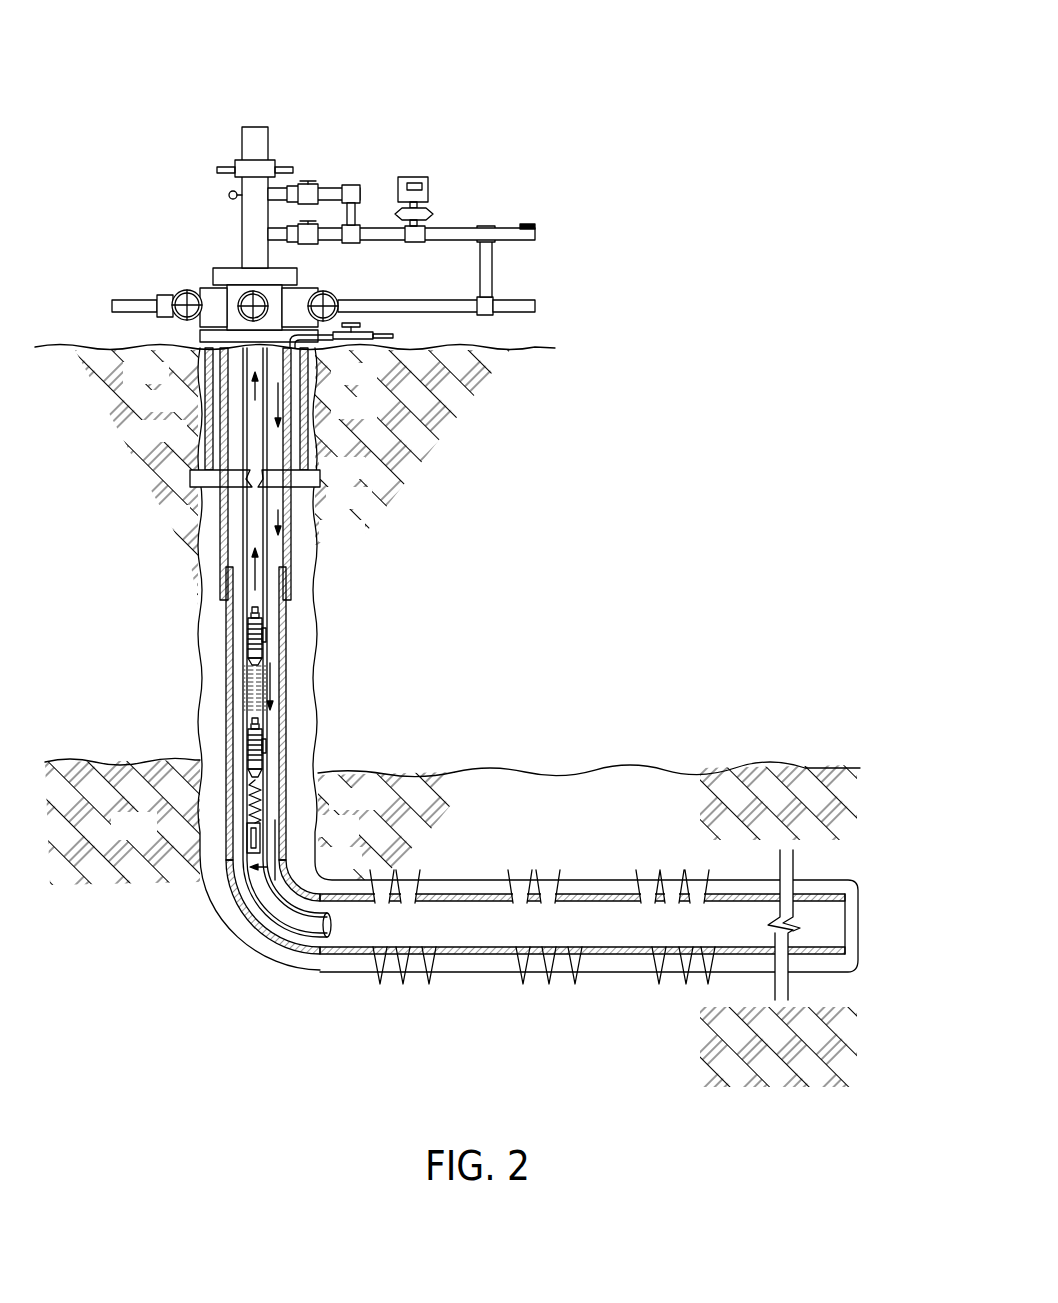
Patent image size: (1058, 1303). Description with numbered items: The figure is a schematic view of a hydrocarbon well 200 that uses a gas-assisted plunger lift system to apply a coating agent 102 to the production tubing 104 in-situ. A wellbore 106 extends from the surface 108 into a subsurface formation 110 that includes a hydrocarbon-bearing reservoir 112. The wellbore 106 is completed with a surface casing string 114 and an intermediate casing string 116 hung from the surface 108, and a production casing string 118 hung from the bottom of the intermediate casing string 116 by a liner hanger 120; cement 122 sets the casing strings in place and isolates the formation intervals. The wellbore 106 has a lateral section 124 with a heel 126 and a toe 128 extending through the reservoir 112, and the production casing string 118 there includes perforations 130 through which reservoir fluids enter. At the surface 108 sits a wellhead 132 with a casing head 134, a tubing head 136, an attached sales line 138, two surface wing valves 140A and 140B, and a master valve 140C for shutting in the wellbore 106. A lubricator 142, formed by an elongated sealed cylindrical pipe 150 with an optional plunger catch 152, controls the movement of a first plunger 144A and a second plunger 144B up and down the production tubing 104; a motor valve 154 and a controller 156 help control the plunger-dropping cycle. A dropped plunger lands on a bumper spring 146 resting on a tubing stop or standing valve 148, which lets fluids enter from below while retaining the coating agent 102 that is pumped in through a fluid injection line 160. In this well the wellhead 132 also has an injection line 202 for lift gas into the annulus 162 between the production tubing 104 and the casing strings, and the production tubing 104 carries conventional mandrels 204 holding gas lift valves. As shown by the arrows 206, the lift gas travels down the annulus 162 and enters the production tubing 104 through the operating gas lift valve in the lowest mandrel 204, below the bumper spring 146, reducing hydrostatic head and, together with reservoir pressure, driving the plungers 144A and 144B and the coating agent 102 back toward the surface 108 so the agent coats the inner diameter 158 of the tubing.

The hydrocarbon well 200 is at (708, 102).
The wellhead 132 is at (307, 204).
The lubricator 142 is at (196, 192).
The elongated, sealed cylindrical pipe 150 is at (242, 142).
The plunger catch 152 is at (202, 207).
The controller 156 is at (413, 177).
The motor valve 154 is at (433, 214).
The tubing head 136 is at (213, 270).
The surface valve 140A is at (331, 292).
The surface valve 140B is at (178, 294).
The master valve 140C is at (268, 294).
The sales line 138 is at (517, 300).
The fluid injection line 160 is at (113, 301).
The surface 108 is at (83, 347).
The casing head 134 is at (200, 336).
The injection line 202 is at (360, 331).
The surface casing string 114 is at (205, 371).
The intermediate casing string 116 is at (220, 428).
The inner diameter 158 is at (295, 478).
The annulus 162 is at (233, 520).
The wellbore 106 is at (172, 572).
The subsurface formation 110 is at (491, 553).
The liner hanger 120 is at (228, 568).
The production tubing 104 is at (255, 752).
The production casing string 118 is at (226, 660).
The coating agent 102 is at (252, 697).
The cement 122 is at (212, 712).
The first plunger 144A is at (246, 730).
The second plunger 144B is at (268, 640).
The bumper spring 146 is at (264, 791).
The standing valve 148 is at (248, 846).
The reservoir 112 is at (154, 837).
The heel 126 is at (246, 945).
The lateral section 124 is at (475, 995).
The toe 128 is at (858, 920).
The perforations 130 is at (395, 877).
The conventional mandrel 204 is at (303, 425).
The arrows 206 is at (250, 390).